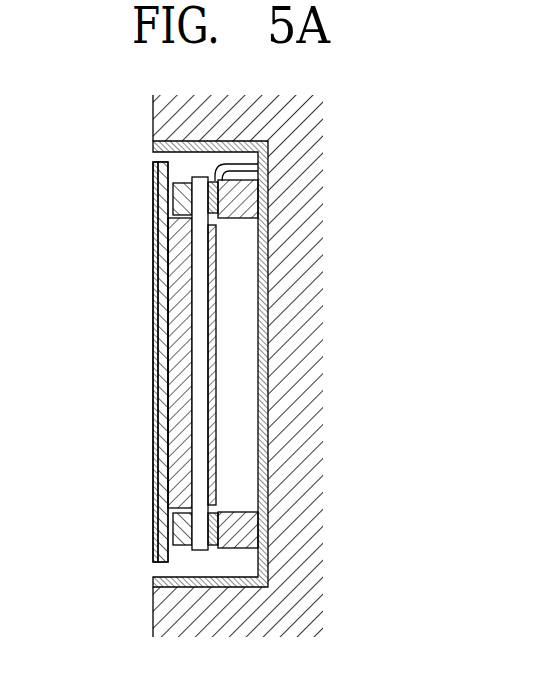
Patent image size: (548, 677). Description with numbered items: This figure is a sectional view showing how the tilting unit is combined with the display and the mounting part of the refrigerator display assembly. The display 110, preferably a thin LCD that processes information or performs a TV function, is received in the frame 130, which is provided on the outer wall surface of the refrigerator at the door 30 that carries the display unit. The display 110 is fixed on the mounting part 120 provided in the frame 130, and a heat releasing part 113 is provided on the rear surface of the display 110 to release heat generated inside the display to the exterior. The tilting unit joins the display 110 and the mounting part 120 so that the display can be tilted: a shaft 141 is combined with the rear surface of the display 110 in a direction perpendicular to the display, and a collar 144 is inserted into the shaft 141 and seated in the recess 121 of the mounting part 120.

The door 30 is at (317, 357).
The display 110 is at (153, 340).
The heat releasing part 113 is at (175, 405).
The mounting part 120 is at (247, 194).
The recess 121 is at (258, 164).
The frame 130 is at (263, 308).
The shaft 141 is at (200, 453).
The collar 144 is at (218, 530).